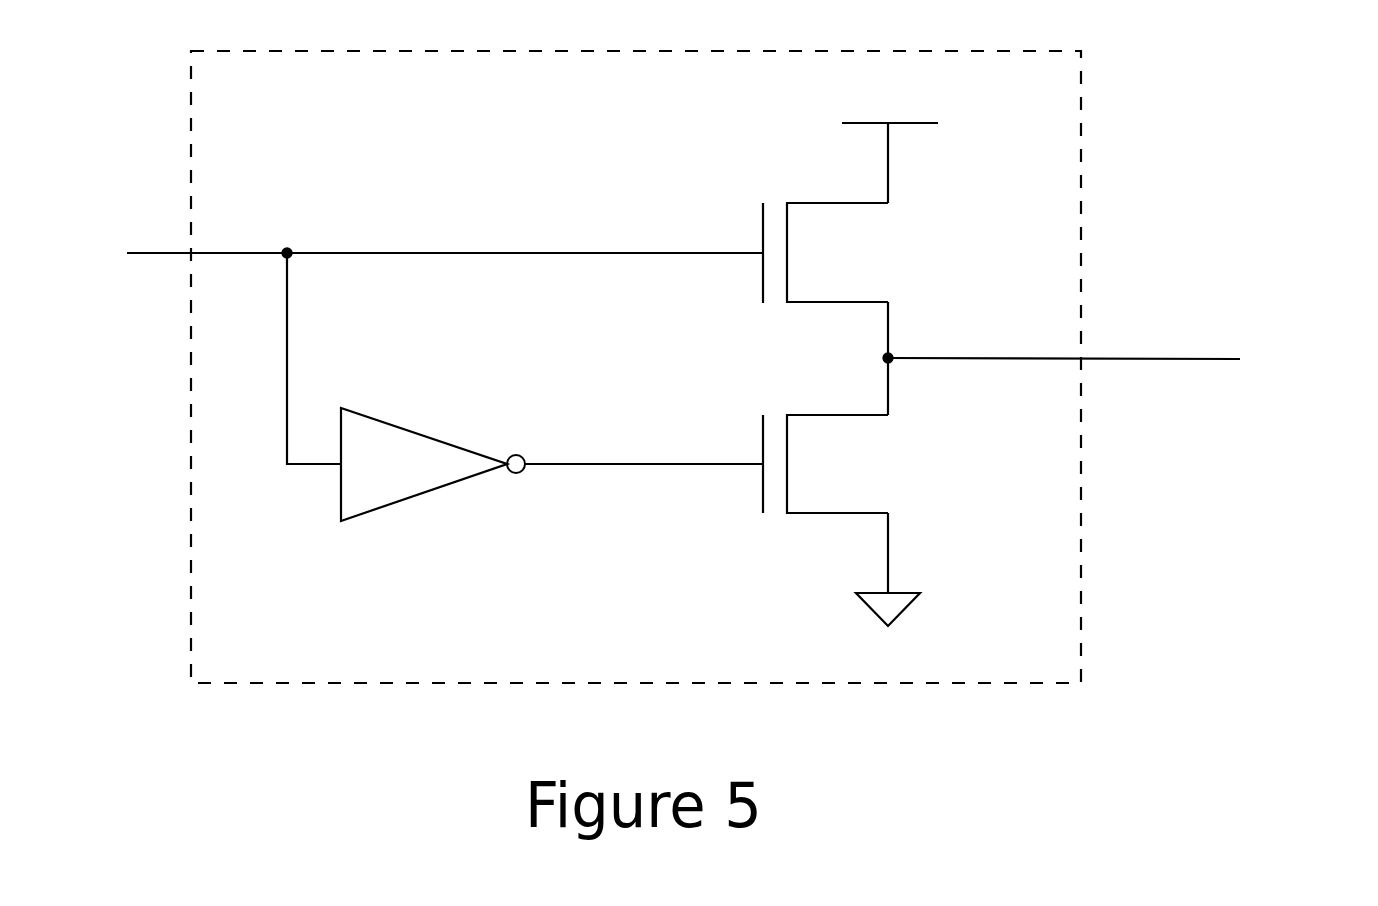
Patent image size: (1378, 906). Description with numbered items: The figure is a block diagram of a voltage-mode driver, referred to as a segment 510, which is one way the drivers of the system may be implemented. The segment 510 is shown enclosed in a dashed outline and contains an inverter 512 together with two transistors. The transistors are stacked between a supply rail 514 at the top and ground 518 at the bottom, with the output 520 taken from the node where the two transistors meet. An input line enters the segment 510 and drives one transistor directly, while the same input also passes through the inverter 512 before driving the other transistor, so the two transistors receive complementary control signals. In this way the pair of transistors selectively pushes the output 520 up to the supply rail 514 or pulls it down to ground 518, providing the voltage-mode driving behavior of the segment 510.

The segment 510 is at (1081, 217).
The inverter 512 is at (426, 478).
The supply rail 514 is at (905, 123).
The ground 518 is at (903, 590).
The output 520 is at (1097, 361).